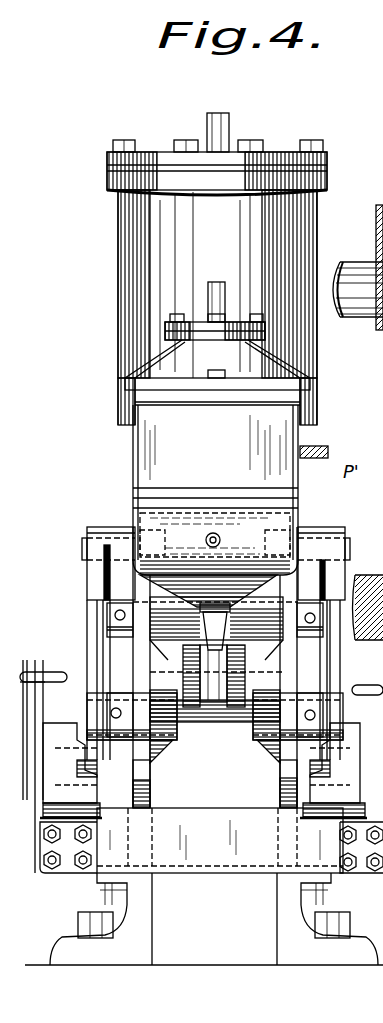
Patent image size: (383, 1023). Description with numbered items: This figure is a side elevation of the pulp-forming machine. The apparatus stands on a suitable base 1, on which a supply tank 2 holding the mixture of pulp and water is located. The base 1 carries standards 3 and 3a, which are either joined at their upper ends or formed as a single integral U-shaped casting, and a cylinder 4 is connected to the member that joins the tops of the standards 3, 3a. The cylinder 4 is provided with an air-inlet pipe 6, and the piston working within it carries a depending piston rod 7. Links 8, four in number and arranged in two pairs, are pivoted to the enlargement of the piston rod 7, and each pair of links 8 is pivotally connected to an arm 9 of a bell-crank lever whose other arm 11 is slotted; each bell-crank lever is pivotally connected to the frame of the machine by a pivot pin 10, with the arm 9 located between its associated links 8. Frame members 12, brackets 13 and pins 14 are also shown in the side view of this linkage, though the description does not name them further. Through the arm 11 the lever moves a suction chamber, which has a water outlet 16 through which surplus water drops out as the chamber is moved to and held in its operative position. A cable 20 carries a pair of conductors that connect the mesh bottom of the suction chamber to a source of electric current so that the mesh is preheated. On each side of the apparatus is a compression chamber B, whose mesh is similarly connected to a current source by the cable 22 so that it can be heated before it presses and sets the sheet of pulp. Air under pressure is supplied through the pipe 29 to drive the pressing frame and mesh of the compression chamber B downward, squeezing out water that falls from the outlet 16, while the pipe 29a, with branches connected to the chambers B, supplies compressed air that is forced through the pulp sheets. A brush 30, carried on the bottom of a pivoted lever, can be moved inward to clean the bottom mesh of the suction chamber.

The base 1 is at (143, 952).
The supply tank 2 is at (232, 873).
The standard 3 is at (152, 793).
The standard 3a is at (268, 784).
The cylinder 4 is at (217, 307).
The air-inlet pipe 6 is at (224, 140).
The piston rod 7 is at (253, 642).
The link 8 is at (185, 673).
The arm 9 is at (215, 652).
The pivot pin 10 is at (138, 640).
The arm 11 is at (123, 542).
The side rod 12 is at (90, 633).
The lower bracket 13 is at (86, 708).
The pivot pin 14 is at (84, 552).
The water outlet 16 is at (228, 603).
The cable 20 is at (211, 530).
The cable 22 is at (326, 452).
The pipe 29 is at (208, 291).
The pipe 29a is at (339, 264).
The brush 30 is at (88, 762).
The compression chamber B is at (215, 490).